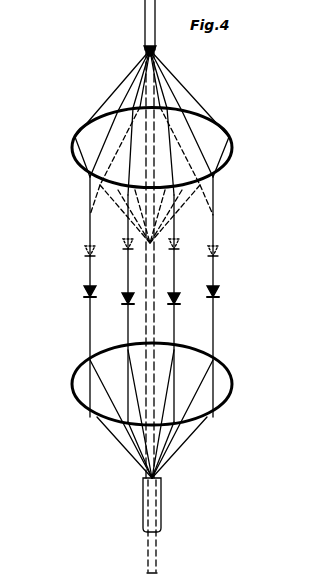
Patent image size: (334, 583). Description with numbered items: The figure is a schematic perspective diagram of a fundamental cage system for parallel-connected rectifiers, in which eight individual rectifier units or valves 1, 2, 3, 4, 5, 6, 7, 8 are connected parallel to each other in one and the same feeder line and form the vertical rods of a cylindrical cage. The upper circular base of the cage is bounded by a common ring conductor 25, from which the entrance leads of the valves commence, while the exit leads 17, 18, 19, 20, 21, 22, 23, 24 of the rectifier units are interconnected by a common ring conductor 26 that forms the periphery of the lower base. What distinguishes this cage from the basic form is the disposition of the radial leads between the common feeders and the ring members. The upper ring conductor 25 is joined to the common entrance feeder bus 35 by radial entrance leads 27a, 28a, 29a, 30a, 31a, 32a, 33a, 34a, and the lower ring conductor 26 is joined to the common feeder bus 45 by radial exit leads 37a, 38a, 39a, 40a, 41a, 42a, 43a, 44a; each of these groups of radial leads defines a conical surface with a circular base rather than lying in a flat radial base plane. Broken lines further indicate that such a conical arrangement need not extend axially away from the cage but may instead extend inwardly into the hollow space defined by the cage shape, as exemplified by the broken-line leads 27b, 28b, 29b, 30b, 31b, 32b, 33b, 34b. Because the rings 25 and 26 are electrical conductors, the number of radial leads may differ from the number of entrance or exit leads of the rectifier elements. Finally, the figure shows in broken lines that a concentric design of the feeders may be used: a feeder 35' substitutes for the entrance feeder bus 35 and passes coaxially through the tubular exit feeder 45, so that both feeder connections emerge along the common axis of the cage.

The rectifier unit 1 is at (83, 293).
The rectifier unit 2 is at (121, 300).
The rectifier unit 3 is at (169, 300).
The rectifier unit 4 is at (207, 293).
The rectifier unit 5 is at (220, 248).
The rectifier unit 6 is at (180, 240).
The rectifier unit 7 is at (121, 240).
The rectifier unit 8 is at (82, 252).
The exit lead 17 is at (90, 319).
The exit lead 18 is at (128, 319).
The exit lead 19 is at (174, 319).
The exit lead 20 is at (213, 319).
The exit lead 21 is at (213, 280).
The exit lead 22 is at (213, 270).
The exit lead 23 is at (128, 278).
The exit lead 24 is at (90, 274).
The ring conductor 25 is at (232, 146).
The ring conductor 26 is at (233, 386).
The radial entrance lead 27a is at (76, 150).
The radial entrance lead 28a is at (95, 168).
The radial entrance lead 29a is at (235, 155).
The radial entrance lead 30a is at (215, 170).
The broken-line lead 27b is at (92, 190).
The broken-line lead 28b is at (108, 208).
The broken-line lead 29b is at (220, 210).
The broken-line lead 30b is at (200, 198).
The radial entrance lead 31a is at (190, 100).
The radial entrance lead 32a is at (175, 98).
The radial entrance lead 33a is at (127, 96).
The radial entrance lead 34a is at (126, 81).
The broken-line lead 31b is at (238, 112).
The broken-line lead 32b is at (196, 112).
The broken-line lead 33b is at (125, 191).
The broken-line lead 34b is at (88, 128).
The entrance feeder bus 35 is at (131, 28).
The feeder 35' is at (212, 404).
The radial exit lead 37a is at (112, 433).
The radial exit lead 38a is at (118, 449).
The radial exit lead 39a is at (175, 470).
The radial exit lead 40a is at (188, 446).
The radial exit lead 41a is at (196, 430).
The radial exit lead 42a is at (180, 456).
The radial exit lead 43a is at (141, 470).
The radial exit lead 44a is at (126, 462).
The feeder bus 45 is at (143, 505).